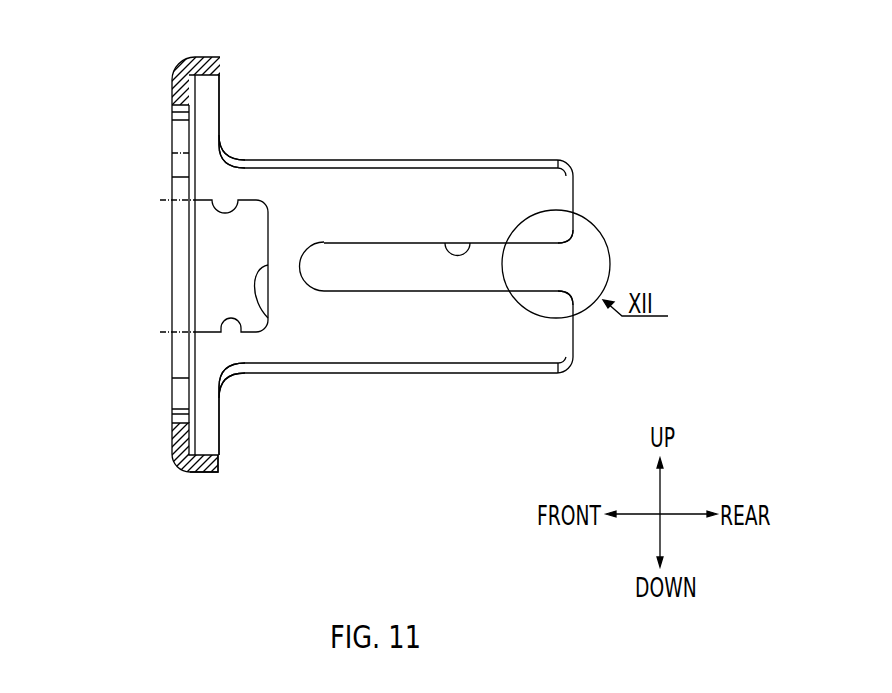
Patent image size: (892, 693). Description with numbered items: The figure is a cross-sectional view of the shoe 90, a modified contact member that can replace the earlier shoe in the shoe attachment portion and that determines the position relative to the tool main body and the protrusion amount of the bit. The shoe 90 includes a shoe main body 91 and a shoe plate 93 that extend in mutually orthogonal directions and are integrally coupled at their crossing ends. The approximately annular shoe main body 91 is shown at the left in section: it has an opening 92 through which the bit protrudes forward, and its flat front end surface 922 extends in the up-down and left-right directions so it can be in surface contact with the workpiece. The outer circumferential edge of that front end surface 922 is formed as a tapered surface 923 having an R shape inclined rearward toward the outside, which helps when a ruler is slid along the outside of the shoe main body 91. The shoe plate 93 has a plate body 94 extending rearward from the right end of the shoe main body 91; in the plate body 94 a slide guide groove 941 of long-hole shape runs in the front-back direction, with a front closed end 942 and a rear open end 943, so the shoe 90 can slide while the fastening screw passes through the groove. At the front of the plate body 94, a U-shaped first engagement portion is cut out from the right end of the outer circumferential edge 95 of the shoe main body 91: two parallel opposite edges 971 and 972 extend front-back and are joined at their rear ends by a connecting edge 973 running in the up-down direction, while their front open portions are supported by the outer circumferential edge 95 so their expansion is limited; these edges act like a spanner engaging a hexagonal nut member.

The shoe 90 is at (439, 302).
The shoe main body 91 is at (170, 433).
The opening 92 is at (177, 395).
The front end surface 922 is at (170, 90).
The tapered surface 923 is at (174, 73).
The shoe plate 93 is at (423, 195).
The plate body 94 is at (417, 340).
The slide guide groove 941 is at (475, 243).
The front closed end 942 is at (312, 267).
The rear open end 943 is at (562, 244).
The outer circumferential edge 95 is at (200, 473).
The opposite edge 971 is at (242, 200).
The opposite edge 972 is at (240, 333).
The connecting edge 973 is at (268, 318).